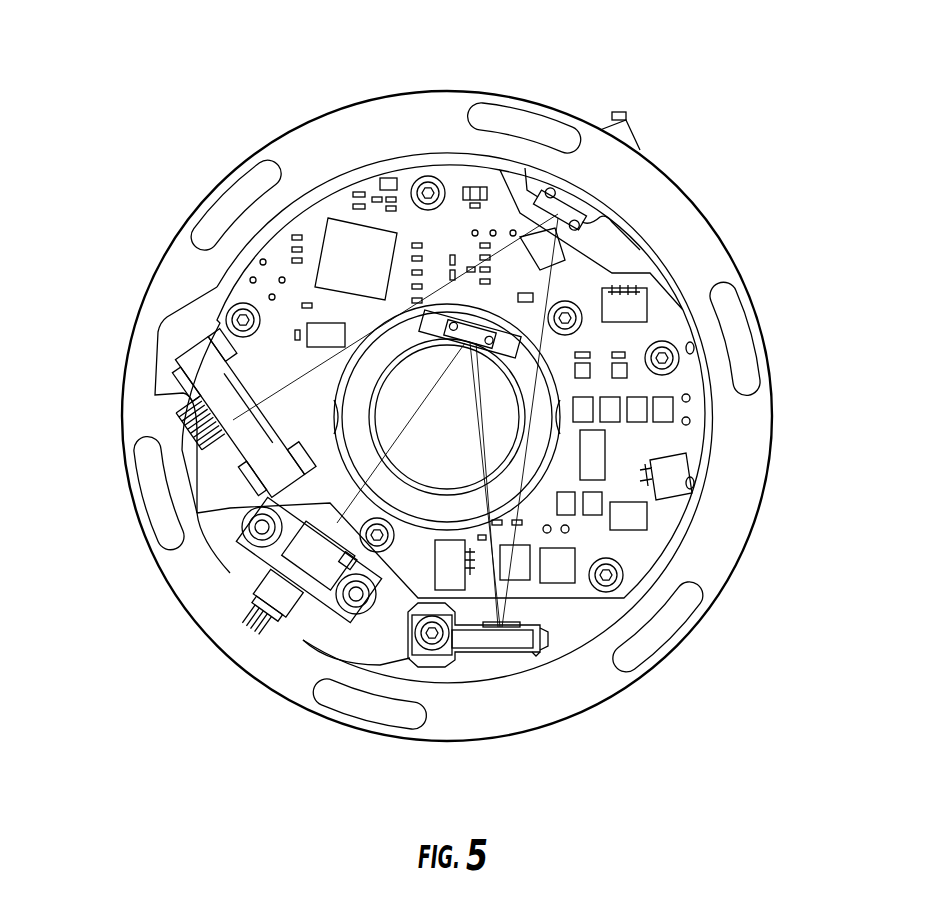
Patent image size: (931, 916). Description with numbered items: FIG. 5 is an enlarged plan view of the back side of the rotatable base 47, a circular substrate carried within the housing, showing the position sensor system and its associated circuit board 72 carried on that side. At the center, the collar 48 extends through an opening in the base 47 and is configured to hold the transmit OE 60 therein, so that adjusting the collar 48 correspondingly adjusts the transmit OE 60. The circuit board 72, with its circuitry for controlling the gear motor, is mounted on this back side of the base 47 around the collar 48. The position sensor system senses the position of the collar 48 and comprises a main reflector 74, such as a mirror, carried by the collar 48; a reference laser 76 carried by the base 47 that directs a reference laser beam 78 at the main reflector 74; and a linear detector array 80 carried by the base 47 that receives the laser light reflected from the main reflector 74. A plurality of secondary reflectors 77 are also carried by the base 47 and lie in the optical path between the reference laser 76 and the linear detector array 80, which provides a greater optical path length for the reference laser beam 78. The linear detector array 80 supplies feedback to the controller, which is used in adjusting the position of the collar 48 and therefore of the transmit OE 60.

The base 47 is at (432, 90).
The collar 48 is at (462, 521).
The transmit OE 60 is at (462, 449).
The circuit board 72 is at (660, 307).
The main reflector 74 is at (462, 318).
The reference laser 76 is at (262, 563).
The secondary reflectors 77 is at (575, 216).
The reference laser beam 78 is at (330, 505).
The linear detector array 80 is at (215, 392).